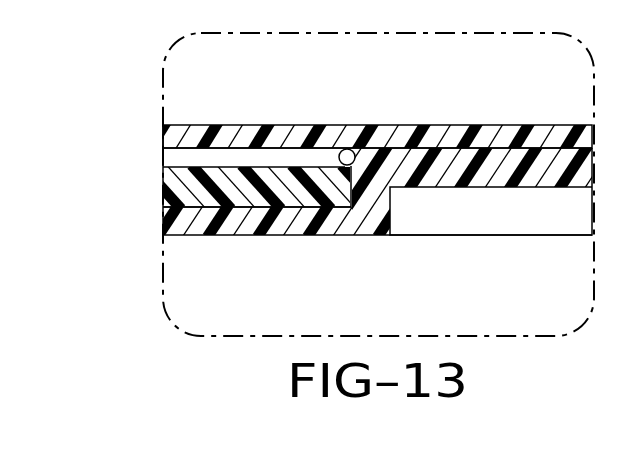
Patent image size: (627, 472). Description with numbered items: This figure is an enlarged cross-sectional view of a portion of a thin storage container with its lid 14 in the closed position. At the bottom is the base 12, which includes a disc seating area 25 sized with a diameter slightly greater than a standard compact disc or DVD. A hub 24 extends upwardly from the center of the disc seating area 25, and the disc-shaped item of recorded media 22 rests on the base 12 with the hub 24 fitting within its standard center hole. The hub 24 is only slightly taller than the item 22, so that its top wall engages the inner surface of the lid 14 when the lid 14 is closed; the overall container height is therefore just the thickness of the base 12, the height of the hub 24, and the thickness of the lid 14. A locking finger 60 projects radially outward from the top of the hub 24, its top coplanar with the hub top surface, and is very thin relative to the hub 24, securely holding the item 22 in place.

The base 12 is at (303, 240).
The lid 14 is at (445, 121).
The disc-shaped item of recorded media 22 is at (233, 181).
The hub 24 is at (395, 155).
The disc seating area 25 is at (265, 208).
The locking finger 60 is at (346, 163).